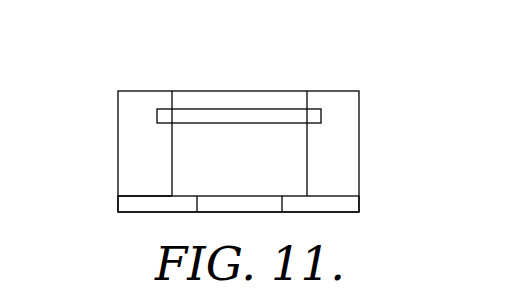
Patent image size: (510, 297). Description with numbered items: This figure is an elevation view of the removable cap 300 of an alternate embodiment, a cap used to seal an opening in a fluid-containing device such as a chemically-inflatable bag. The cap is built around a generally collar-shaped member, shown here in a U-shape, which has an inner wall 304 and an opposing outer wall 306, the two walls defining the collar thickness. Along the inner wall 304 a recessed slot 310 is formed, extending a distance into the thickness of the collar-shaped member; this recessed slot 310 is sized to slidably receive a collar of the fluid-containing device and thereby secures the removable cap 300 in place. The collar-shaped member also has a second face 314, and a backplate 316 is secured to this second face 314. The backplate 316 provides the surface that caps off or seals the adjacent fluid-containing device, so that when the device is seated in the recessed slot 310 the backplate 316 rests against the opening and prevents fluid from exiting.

The removable cap 300 is at (296, 56).
The inner wall 304 is at (218, 169).
The outer wall 306 is at (359, 140).
The recessed slot 310 is at (231, 118).
The second face 314 is at (131, 196).
The backplate 316 is at (343, 203).